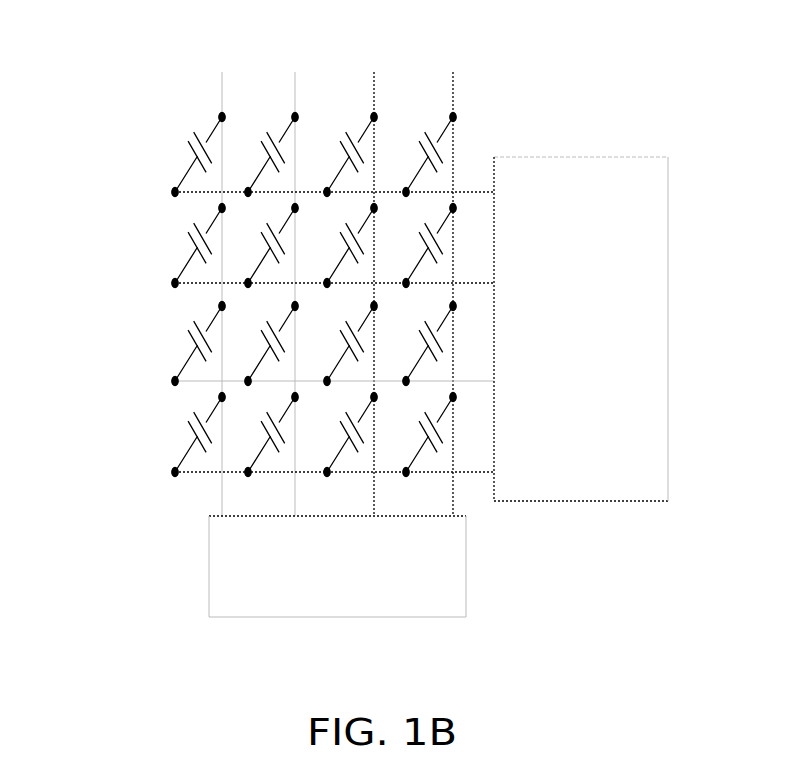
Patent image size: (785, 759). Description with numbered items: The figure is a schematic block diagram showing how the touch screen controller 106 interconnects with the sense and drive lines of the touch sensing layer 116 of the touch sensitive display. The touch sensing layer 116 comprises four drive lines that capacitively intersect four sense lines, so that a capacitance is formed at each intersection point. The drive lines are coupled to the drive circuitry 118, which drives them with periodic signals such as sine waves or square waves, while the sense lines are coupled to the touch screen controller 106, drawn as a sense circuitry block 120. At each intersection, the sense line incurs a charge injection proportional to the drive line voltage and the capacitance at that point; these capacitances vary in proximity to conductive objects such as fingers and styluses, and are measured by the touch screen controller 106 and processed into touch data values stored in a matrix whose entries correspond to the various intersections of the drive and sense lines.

The touch screen controller 106 is at (548, 571).
The touch sensing layer 116 is at (128, 86).
The drive circuitry 118 is at (278, 618).
The sense circuitry 120 is at (668, 272).